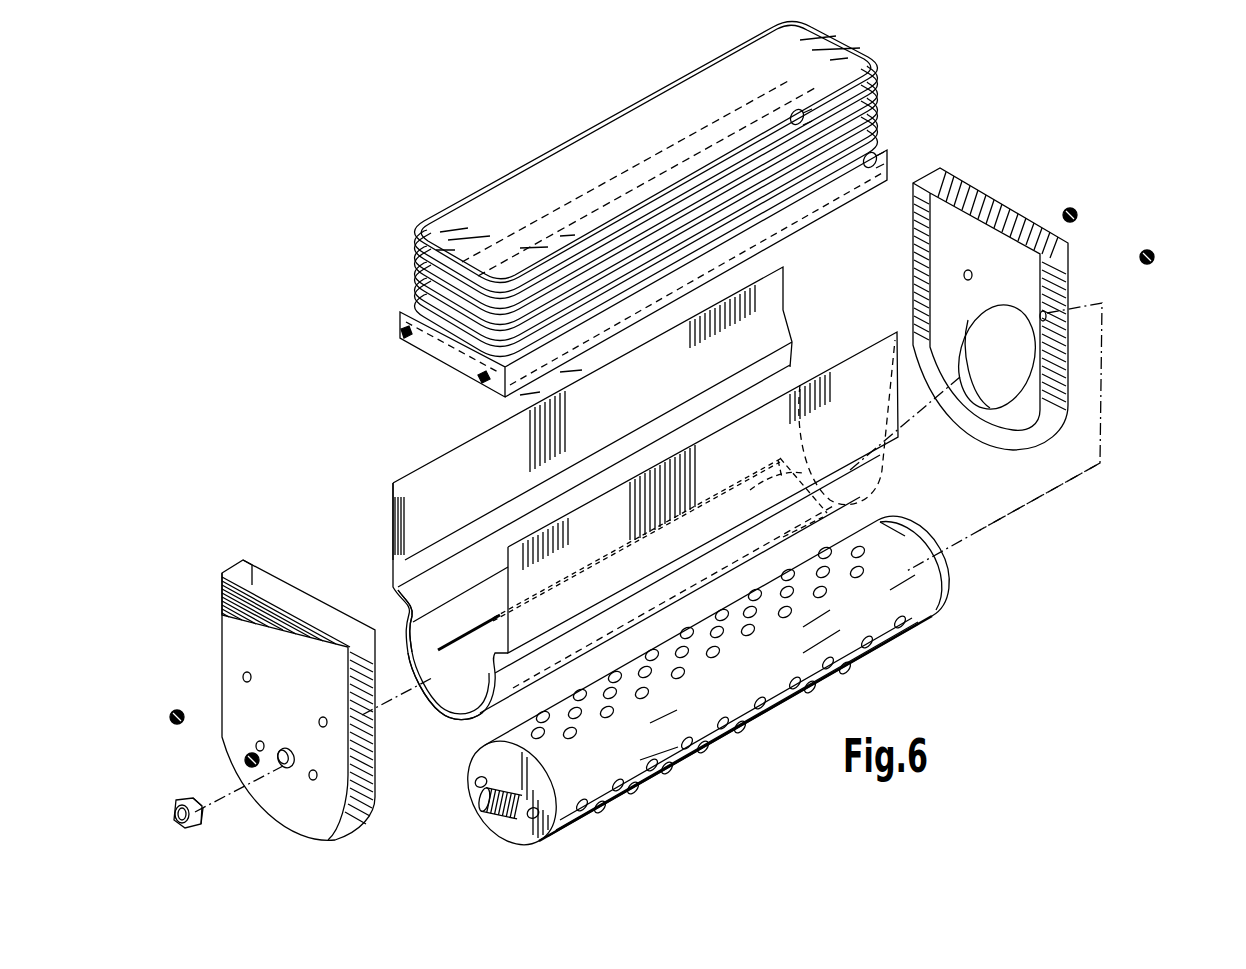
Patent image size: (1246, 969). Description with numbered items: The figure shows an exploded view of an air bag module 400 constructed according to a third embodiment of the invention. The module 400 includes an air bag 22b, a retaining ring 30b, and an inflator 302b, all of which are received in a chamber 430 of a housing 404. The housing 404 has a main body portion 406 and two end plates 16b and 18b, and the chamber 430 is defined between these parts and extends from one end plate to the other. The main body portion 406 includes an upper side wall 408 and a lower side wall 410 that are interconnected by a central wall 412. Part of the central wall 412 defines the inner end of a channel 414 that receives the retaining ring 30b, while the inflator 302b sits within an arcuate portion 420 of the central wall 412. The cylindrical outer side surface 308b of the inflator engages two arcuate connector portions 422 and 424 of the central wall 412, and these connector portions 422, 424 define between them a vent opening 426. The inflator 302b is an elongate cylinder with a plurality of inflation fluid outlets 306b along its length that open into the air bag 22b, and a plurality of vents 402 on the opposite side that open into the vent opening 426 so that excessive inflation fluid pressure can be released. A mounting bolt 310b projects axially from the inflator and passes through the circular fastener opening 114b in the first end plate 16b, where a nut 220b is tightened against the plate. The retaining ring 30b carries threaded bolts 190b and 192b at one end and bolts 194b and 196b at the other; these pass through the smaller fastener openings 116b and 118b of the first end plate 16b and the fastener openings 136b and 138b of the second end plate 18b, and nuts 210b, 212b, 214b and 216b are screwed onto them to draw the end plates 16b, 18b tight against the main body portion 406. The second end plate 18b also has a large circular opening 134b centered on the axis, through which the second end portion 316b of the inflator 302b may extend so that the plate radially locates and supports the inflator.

The air bag 22b is at (598, 118).
The fastener 194b is at (802, 112).
The fastener 196b is at (878, 152).
The retaining ring 30b is at (392, 328).
The fastener 190b is at (406, 340).
The fastener 192b is at (483, 382).
The air bag module 400 is at (278, 309).
The housing 404 is at (273, 457).
The main body portion 406 is at (360, 422).
The upper side wall 408 is at (456, 447).
The lower side wall 410 is at (507, 565).
The arcuate connector portion 424 is at (807, 438).
The vent opening 426 is at (490, 604).
The channel 414 is at (392, 578).
The arcuate connector portion 422 is at (410, 632).
The central wall 412 is at (424, 703).
The arcuate portion 420 is at (462, 727).
The second end plate 18b is at (1005, 197).
The large circular opening 134b is at (993, 340).
The fastener opening 136b is at (967, 271).
The fastener opening 138b is at (1052, 315).
The chamber 430 is at (925, 450).
The nut 214b is at (1072, 208).
The nut 216b is at (1155, 255).
The first end plate 16b is at (210, 592).
The fastener opening 116b is at (246, 672).
The fastener opening 118b is at (320, 723).
The circular fastener opening 114b is at (283, 768).
The nut 210b is at (176, 709).
The nut 212b is at (246, 758).
The nut 220b is at (184, 798).
The inflator 302b is at (726, 750).
The second end portion 316b is at (942, 560).
The inflation fluid outlets 306b is at (820, 600).
The cylindrical outer side surface 308b is at (795, 700).
The vents 402 is at (597, 808).
The mounting bolt 310b is at (472, 802).